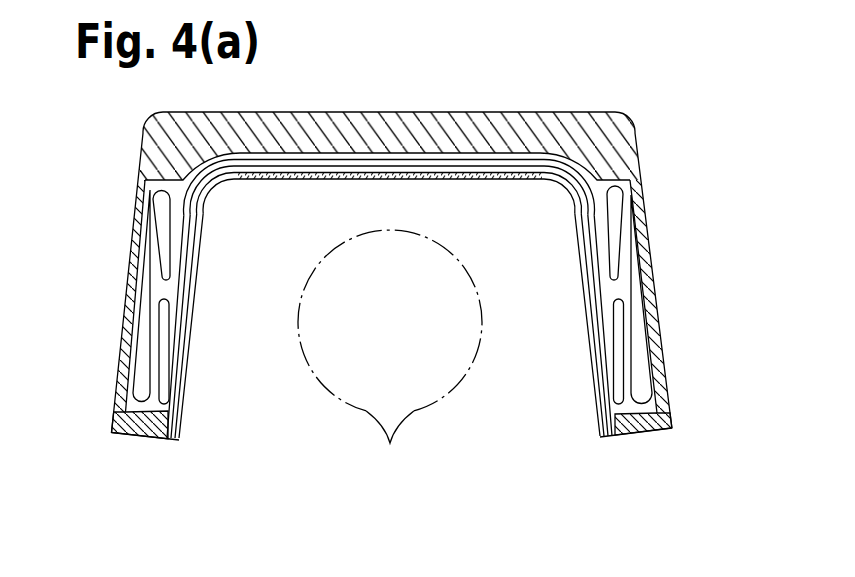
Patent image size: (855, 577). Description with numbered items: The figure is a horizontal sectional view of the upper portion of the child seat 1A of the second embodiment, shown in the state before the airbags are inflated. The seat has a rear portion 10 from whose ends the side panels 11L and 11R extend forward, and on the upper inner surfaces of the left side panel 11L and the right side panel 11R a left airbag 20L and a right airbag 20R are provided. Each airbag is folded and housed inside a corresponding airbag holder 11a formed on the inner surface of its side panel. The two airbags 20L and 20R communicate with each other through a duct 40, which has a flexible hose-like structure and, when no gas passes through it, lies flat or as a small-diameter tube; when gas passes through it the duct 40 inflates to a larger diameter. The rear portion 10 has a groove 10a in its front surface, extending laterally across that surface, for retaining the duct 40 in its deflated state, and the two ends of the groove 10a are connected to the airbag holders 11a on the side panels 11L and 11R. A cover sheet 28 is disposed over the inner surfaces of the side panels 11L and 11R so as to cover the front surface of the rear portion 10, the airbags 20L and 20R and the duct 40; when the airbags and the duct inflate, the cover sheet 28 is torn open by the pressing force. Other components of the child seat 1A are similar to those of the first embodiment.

The child seat 1A is at (685, 140).
The rear portion 10 is at (390, 110).
The groove 10a is at (263, 162).
The right side panel 11R is at (128, 276).
The left side panel 11L is at (659, 270).
The airbag holder 11a is at (597, 203).
The cover sheet 28 is at (197, 300).
The duct 40 is at (355, 178).
The right airbag 20R is at (187, 402).
The left airbag 20L is at (600, 402).